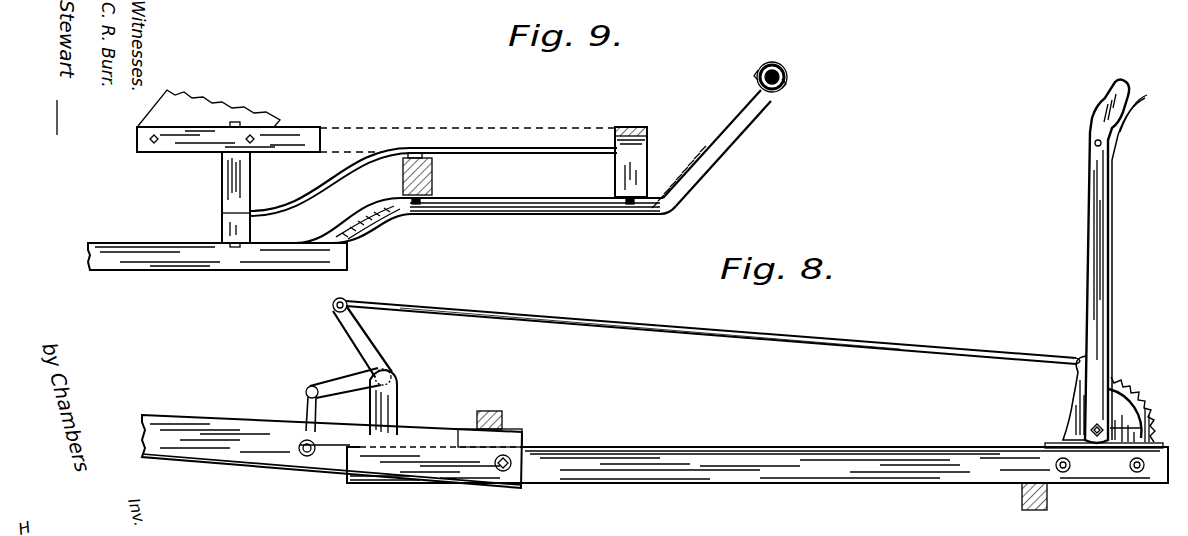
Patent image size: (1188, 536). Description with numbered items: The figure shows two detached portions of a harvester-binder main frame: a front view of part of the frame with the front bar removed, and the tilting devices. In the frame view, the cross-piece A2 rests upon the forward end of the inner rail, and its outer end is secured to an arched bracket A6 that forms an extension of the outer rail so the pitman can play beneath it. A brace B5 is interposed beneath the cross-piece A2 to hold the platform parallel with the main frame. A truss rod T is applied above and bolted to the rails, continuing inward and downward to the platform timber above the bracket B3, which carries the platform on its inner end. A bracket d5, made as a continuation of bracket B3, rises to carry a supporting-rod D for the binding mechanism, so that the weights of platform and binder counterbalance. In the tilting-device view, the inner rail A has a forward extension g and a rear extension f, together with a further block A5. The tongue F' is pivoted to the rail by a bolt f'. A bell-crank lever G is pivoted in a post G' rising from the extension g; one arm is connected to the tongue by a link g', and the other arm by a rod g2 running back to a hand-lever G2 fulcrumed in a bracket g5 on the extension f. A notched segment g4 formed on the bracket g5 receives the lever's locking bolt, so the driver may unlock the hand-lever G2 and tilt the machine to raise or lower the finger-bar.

In FIG. 9, the cross-piece A2 is at (193, 145).
In FIG. 8, the cross-piece A2 is at (502, 418).
In FIG. 9, the brace B5 is at (248, 172).
In FIG. 9, the brace or truss rod T is at (508, 146).
In FIG. 9, the arched bracket A6 is at (626, 127).
In FIG. 9, the bracket B3 is at (495, 203).
In FIG. 9, the brace or bracket d5 is at (728, 140).
In FIG. 9, the supporting-rod D is at (787, 76).
In FIG. 8, the inner longitudinal rail A is at (757, 465).
In FIG. 8, the tongue F' is at (332, 451).
In FIG. 8, the forward extension g is at (376, 481).
In FIG. 8, the bolt f' is at (495, 483).
In FIG. 8, the bell-crank lever G is at (349, 348).
In FIG. 8, the post or bracket G' is at (402, 402).
In FIG. 8, the link g' is at (294, 414).
In FIG. 8, the rod g2 is at (740, 338).
In FIG. 8, the notched segment g4 is at (1074, 396).
In FIG. 8, the bracket g5 is at (1055, 443).
In FIG. 8, the hand-lever G2 is at (1110, 290).
In FIG. 8, the block A5 is at (1047, 500).
In FIG. 8, the rear extension f is at (1157, 478).